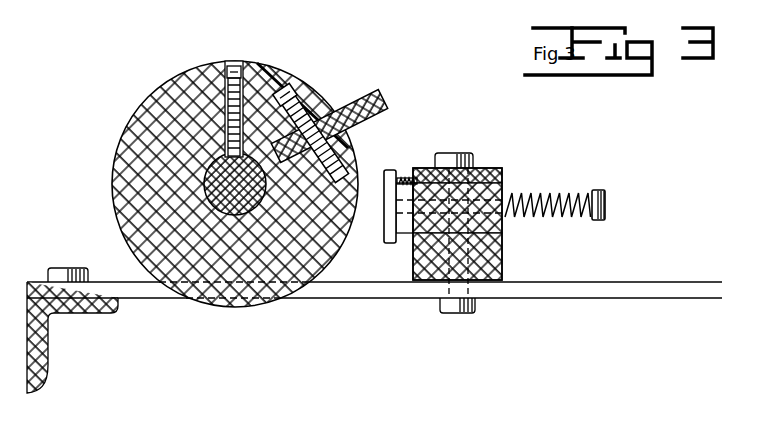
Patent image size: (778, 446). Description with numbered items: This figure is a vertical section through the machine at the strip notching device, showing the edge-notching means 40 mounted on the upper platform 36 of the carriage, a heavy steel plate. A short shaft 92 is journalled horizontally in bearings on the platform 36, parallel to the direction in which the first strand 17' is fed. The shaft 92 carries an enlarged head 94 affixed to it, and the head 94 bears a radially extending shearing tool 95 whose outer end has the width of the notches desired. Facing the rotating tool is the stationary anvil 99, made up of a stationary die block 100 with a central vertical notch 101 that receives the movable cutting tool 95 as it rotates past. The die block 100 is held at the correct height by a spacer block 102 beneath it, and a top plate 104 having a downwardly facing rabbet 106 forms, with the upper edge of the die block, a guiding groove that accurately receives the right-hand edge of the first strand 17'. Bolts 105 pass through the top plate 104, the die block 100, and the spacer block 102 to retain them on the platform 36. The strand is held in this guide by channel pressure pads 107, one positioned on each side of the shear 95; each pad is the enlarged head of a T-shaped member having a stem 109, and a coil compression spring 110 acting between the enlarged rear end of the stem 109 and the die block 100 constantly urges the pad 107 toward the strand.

The upper platform 36 is at (575, 298).
The edge-notching means 40 is at (424, 80).
The short shaft 92 is at (217, 192).
The enlarged head 94 is at (198, 78).
The shearing tool 95 is at (367, 88).
The stationary anvil 99 is at (512, 160).
The stationary die block 100 is at (503, 194).
The central vertical notch 101 is at (403, 193).
The spacer block 102 is at (497, 264).
The top plate 104 is at (478, 172).
The bolts 105 is at (443, 300).
The downwardly facing rabbet 106 is at (412, 172).
The channel pressure pad 107 is at (378, 180).
The first strand 17' is at (419, 153).
The stem 109 is at (522, 216).
The coil compression spring 110 is at (568, 192).